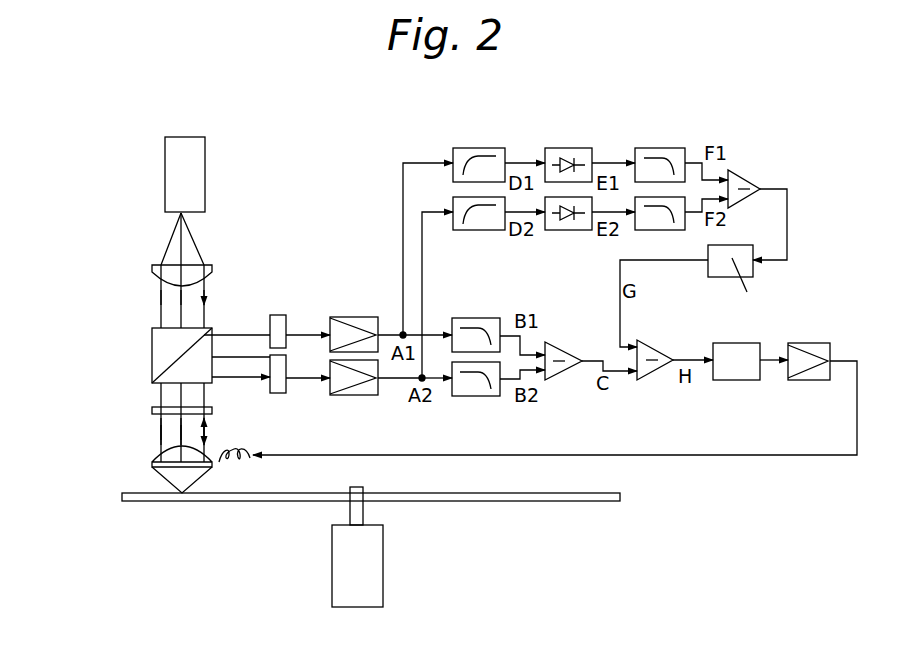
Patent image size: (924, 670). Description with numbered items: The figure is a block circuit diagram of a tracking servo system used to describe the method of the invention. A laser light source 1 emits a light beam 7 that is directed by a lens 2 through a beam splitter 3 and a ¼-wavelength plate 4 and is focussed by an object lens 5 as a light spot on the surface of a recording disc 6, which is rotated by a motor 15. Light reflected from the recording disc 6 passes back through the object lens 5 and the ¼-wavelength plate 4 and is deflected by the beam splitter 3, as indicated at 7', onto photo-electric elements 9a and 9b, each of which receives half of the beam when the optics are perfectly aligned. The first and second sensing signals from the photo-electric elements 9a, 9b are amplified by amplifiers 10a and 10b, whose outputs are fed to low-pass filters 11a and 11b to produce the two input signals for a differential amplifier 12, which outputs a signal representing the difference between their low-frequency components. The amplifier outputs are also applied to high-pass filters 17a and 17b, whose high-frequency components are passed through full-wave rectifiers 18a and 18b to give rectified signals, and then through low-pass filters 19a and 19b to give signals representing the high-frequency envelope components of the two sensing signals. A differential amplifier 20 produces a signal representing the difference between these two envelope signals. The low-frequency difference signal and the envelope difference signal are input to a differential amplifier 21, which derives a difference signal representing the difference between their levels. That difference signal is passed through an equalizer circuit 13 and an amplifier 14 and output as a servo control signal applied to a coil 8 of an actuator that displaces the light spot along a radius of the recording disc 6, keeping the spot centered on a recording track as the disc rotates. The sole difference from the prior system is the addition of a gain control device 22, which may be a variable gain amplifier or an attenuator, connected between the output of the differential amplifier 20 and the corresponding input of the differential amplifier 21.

The laser light source 1 is at (205, 180).
The lens 2 is at (212, 272).
The beam splitter 3 is at (152, 345).
The ¼-wavelength plate 4 is at (152, 410).
The object lens 5 is at (152, 465).
The recording disc 6 is at (270, 503).
The light beam 7 is at (160, 337).
The deflected reflected light 7' is at (237, 331).
The coil 8 is at (235, 447).
The photo-electric element 9a is at (279, 315).
The photo-electric element 9b is at (279, 393).
The amplifier 10a is at (355, 317).
The amplifier 10b is at (355, 395).
The low-pass filter 11a is at (477, 318).
The low-pass filter 11b is at (477, 396).
The differential amplifier 12 is at (567, 350).
The equalizer circuit 13 is at (740, 343).
The amplifier 14 is at (816, 343).
The motor 15 is at (383, 547).
The high-pass filter 17a is at (474, 148).
The high-pass filter 17b is at (470, 230).
The full-wave rectifier 18a is at (568, 148).
The full-wave rectifier 18b is at (568, 230).
The low-pass filter 19a is at (660, 148).
The low-pass filter 19b is at (652, 230).
The differential amplifier 20 is at (748, 178).
The differential amplifier 21 is at (656, 348).
The gain control device 22 is at (753, 268).